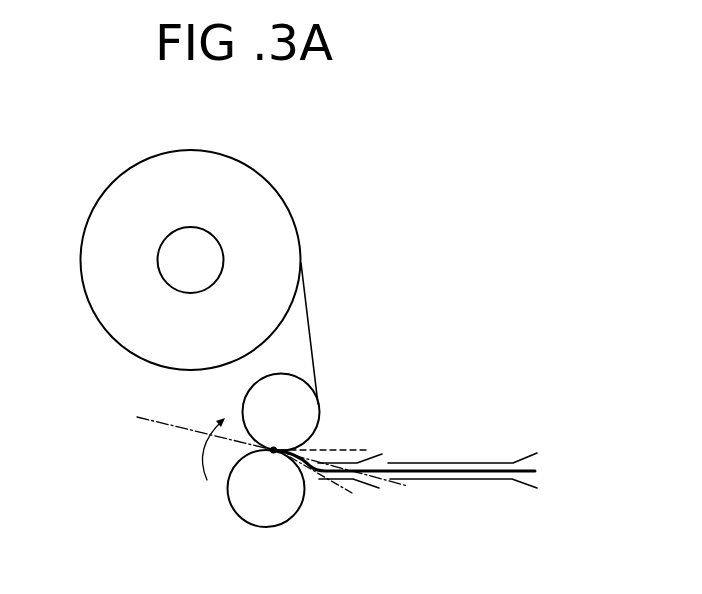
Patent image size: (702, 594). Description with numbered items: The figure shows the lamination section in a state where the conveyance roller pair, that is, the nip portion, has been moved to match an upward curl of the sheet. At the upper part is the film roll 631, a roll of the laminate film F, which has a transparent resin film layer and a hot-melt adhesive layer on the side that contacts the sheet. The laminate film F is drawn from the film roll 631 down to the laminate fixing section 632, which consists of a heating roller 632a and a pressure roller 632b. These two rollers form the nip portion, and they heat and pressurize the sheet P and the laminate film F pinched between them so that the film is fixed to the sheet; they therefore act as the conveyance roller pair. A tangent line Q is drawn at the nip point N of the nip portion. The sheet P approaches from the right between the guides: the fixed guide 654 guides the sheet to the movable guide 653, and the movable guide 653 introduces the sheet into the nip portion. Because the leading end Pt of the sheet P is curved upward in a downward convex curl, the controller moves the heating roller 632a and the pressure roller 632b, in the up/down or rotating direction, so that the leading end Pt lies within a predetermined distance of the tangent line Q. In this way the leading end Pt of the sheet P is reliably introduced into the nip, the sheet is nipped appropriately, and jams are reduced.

The film roll 631 is at (253, 183).
The laminate fixing section 632 is at (195, 466).
The heating roller 632a is at (261, 431).
The pressure roller 632b is at (250, 501).
The movable guide 653 is at (377, 488).
The fixed guide 654 is at (488, 479).
The laminate film F is at (308, 297).
The sheet P is at (452, 470).
The leading end of the sheet Pt is at (293, 452).
The tangent line at the nip point Q is at (142, 417).
The nip point N is at (275, 453).